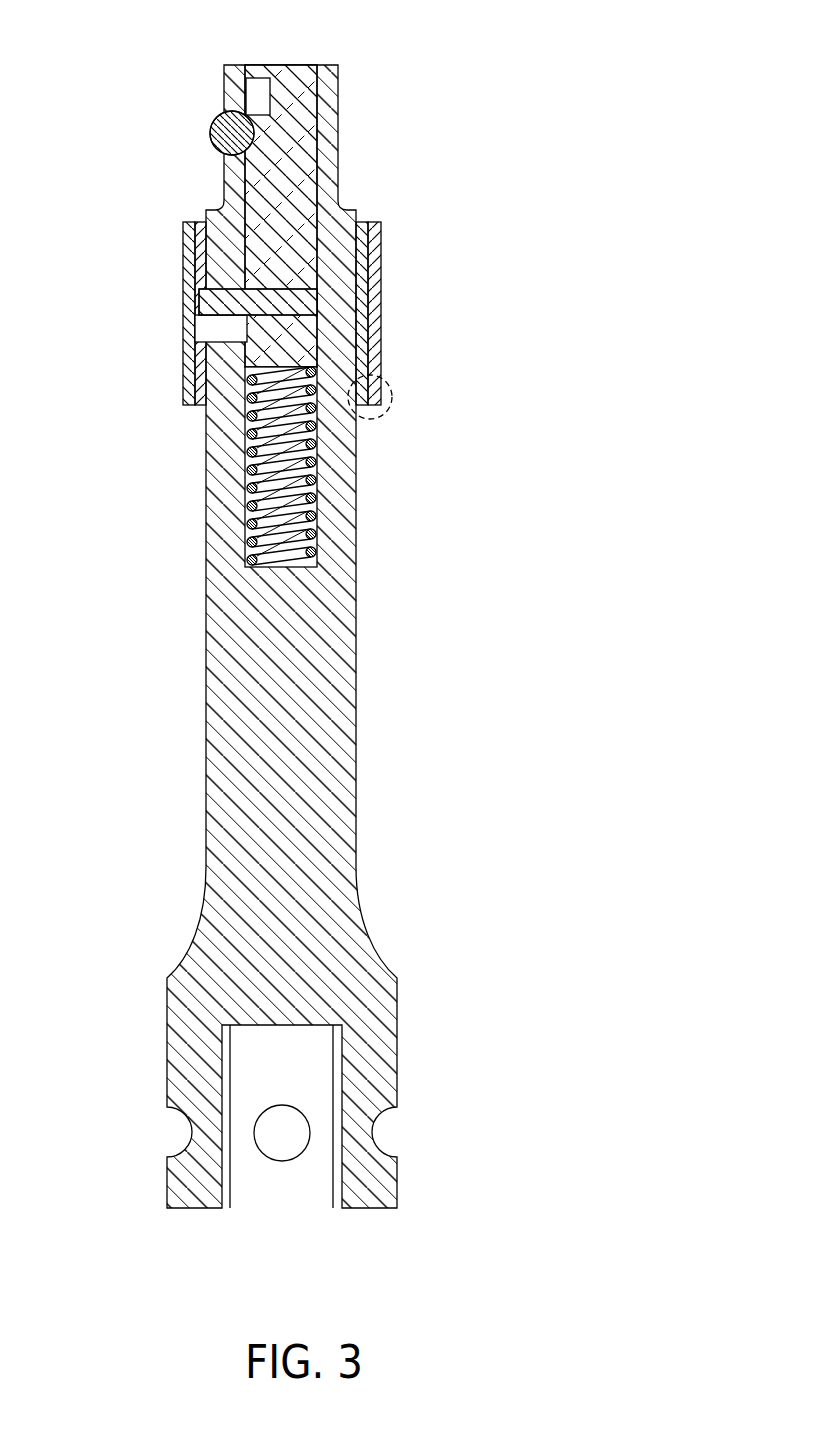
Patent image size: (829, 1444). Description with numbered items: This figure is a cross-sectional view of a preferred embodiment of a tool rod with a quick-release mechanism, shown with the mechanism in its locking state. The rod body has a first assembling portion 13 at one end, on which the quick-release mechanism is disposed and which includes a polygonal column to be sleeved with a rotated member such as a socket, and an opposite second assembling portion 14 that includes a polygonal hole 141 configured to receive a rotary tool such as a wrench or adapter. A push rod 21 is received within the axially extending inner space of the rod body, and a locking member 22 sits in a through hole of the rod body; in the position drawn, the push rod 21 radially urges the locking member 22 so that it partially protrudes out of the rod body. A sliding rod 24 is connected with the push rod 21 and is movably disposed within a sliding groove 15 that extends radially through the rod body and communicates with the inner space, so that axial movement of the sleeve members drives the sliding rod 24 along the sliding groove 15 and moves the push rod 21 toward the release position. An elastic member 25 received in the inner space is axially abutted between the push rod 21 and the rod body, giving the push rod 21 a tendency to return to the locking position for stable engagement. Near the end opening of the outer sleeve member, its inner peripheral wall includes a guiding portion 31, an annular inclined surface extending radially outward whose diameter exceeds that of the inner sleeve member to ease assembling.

The first assembling portion 13 is at (330, 65).
The second assembling portion 14 is at (375, 1208).
The polygonal hole 141 is at (313, 1090).
The sliding groove 15 is at (220, 328).
The push rod 21 is at (307, 150).
The locking member 22 is at (215, 133).
The sliding rod 24 is at (312, 295).
The elastic member 25 is at (313, 460).
The guiding portion 31 is at (390, 393).